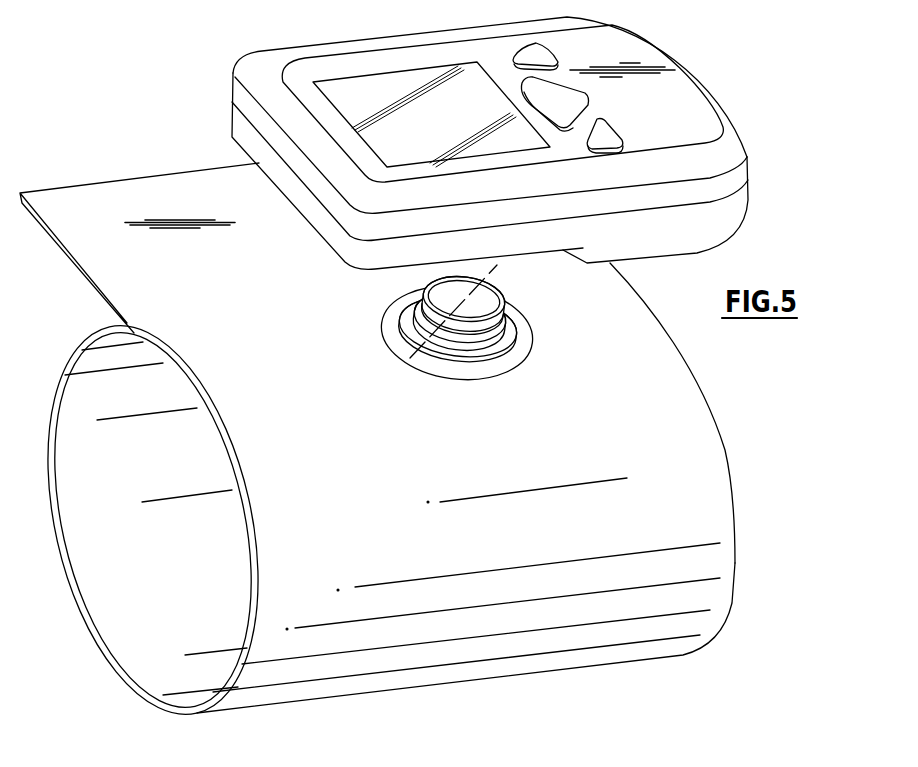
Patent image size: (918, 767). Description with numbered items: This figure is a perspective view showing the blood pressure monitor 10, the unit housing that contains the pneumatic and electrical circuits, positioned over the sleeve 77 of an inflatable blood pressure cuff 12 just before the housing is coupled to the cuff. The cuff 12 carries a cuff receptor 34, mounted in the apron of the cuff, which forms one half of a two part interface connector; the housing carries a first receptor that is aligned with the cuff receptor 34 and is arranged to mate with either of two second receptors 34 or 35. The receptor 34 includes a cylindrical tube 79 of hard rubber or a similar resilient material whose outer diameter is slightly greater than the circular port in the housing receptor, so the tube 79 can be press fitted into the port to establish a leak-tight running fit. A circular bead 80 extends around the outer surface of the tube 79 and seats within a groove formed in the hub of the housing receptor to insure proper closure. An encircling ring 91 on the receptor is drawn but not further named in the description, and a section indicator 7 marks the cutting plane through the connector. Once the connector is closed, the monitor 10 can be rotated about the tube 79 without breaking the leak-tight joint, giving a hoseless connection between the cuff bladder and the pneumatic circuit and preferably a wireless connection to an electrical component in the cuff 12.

The blood pressure monitor 10 is at (745, 72).
The blood pressure cuff 12 is at (718, 412).
The second receptor 34 is at (504, 285).
The second receptor 35 is at (453, 352).
The sleeve 77 is at (717, 513).
The cylindrical tube 79 is at (468, 347).
The circular bead 80 is at (508, 330).
The fastener rim 91 is at (391, 305).
The section line 7- 7 is at (383, 339).